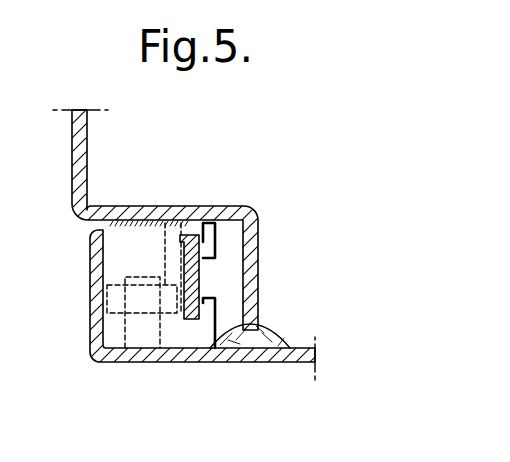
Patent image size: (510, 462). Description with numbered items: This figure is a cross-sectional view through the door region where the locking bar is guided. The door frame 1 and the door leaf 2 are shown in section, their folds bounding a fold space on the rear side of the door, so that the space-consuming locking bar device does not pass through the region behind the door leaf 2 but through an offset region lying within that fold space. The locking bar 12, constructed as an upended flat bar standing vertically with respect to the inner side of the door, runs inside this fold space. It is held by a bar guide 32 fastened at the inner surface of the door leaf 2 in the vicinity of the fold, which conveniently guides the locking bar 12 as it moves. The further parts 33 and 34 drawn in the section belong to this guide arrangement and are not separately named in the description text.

The door frame 1 is at (72, 170).
The door leaf 2 is at (186, 362).
The locking bar 12 is at (207, 269).
The bar guide 32 is at (140, 240).
The plate 33 is at (212, 277).
The recess 34 is at (207, 292).